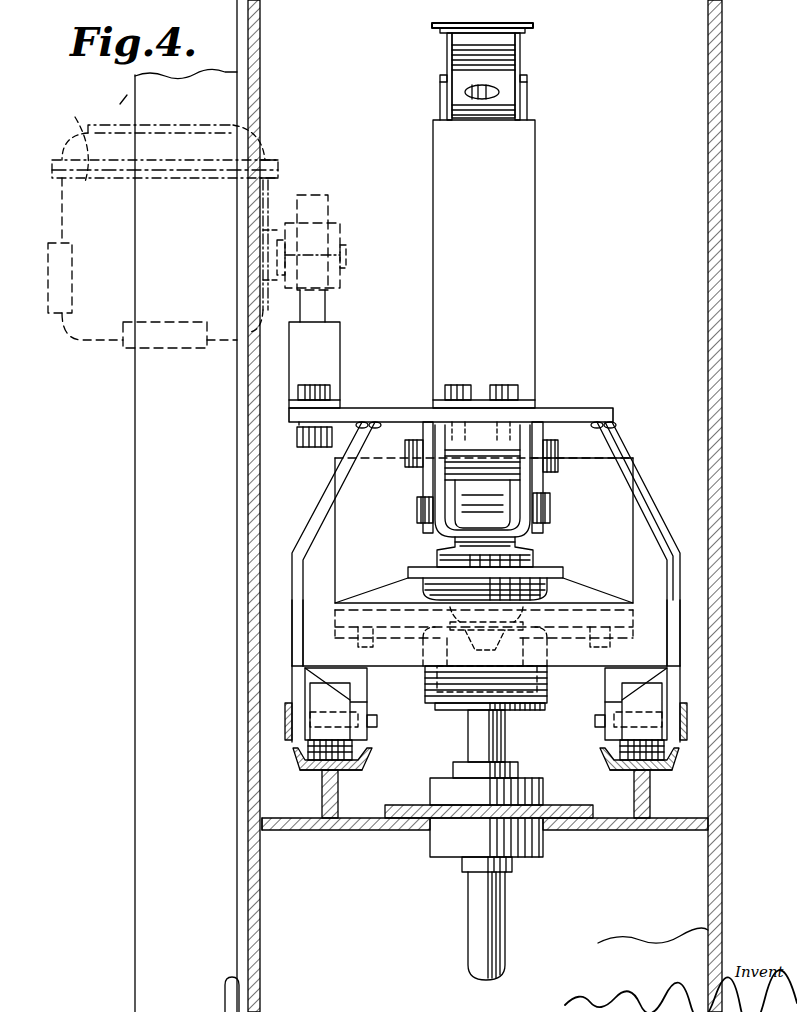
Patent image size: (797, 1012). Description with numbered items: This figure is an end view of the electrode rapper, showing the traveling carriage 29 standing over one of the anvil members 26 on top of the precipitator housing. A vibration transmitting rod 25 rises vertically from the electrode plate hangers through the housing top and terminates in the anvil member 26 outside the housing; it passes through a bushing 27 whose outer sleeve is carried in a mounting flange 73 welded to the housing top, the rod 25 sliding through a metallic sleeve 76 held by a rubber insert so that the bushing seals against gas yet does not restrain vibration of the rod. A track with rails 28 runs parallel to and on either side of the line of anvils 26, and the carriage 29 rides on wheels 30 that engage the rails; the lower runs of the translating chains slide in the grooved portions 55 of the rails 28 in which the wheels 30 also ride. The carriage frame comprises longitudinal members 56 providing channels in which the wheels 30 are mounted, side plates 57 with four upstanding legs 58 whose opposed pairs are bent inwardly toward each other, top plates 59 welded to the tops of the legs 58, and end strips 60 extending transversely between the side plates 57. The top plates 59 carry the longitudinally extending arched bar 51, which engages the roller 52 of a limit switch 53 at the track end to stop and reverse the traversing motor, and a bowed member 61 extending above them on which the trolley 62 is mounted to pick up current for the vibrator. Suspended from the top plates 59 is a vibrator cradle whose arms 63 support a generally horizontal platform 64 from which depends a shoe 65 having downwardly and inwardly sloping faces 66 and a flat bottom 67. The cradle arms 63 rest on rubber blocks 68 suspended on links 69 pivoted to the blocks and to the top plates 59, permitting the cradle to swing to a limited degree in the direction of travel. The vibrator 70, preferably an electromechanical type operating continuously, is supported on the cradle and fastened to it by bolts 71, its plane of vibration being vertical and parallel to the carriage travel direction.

The vibration transmitting rod 25 is at (470, 942).
The anvil member 26 is at (446, 708).
The bushing 27 is at (432, 845).
The rail 28 is at (322, 800).
The carriage 29 is at (645, 487).
The wheel 30 is at (350, 766).
The arched bar 51 is at (320, 350).
The roller 52 is at (318, 215).
The limit switch 53 is at (80, 133).
The grooved portion 55 is at (300, 762).
The longitudinal member 56 is at (285, 705).
The side plate 57 is at (300, 578).
The upstanding leg 58 is at (322, 505).
The top plate 59 is at (585, 408).
The end strip 60 is at (672, 640).
The bowed member 61 is at (518, 217).
The trolley 62 is at (528, 60).
The cradle arm 63 is at (555, 570).
The platform 64 is at (492, 636).
The shoe 65 is at (424, 676).
The sloping face 66 is at (440, 683).
The flat bottom 67 is at (544, 706).
The rubber block 68 is at (518, 552).
The link 69 is at (428, 470).
The vibrator 70 is at (582, 459).
The bolt 71 is at (355, 642).
The mounting flange 73 is at (566, 818).
The metallic sleeve 76 is at (465, 870).